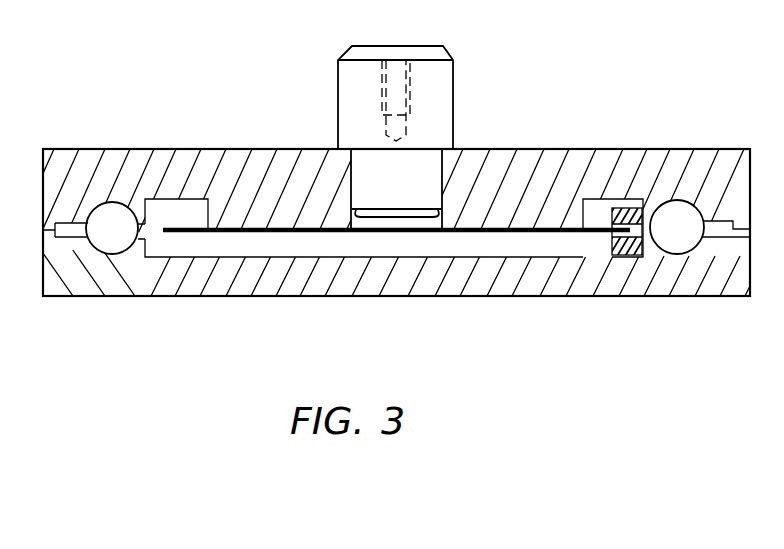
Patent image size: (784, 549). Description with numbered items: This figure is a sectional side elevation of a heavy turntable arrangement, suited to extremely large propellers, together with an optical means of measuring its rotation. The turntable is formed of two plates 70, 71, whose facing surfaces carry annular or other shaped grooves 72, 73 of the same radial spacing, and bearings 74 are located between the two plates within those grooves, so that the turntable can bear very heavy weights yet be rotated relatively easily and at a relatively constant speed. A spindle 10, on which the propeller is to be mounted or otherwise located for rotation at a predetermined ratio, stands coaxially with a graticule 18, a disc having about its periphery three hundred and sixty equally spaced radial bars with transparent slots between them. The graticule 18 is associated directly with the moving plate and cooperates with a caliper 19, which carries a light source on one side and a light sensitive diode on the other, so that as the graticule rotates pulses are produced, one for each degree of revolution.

The spindle 10 is at (442, 108).
The graticule 18 is at (516, 229).
The caliper 19 is at (630, 208).
The plate 70 is at (83, 163).
The plate 71 is at (131, 287).
The groove 72 is at (133, 197).
The groove 73 is at (138, 257).
The bearings 74 is at (100, 246).